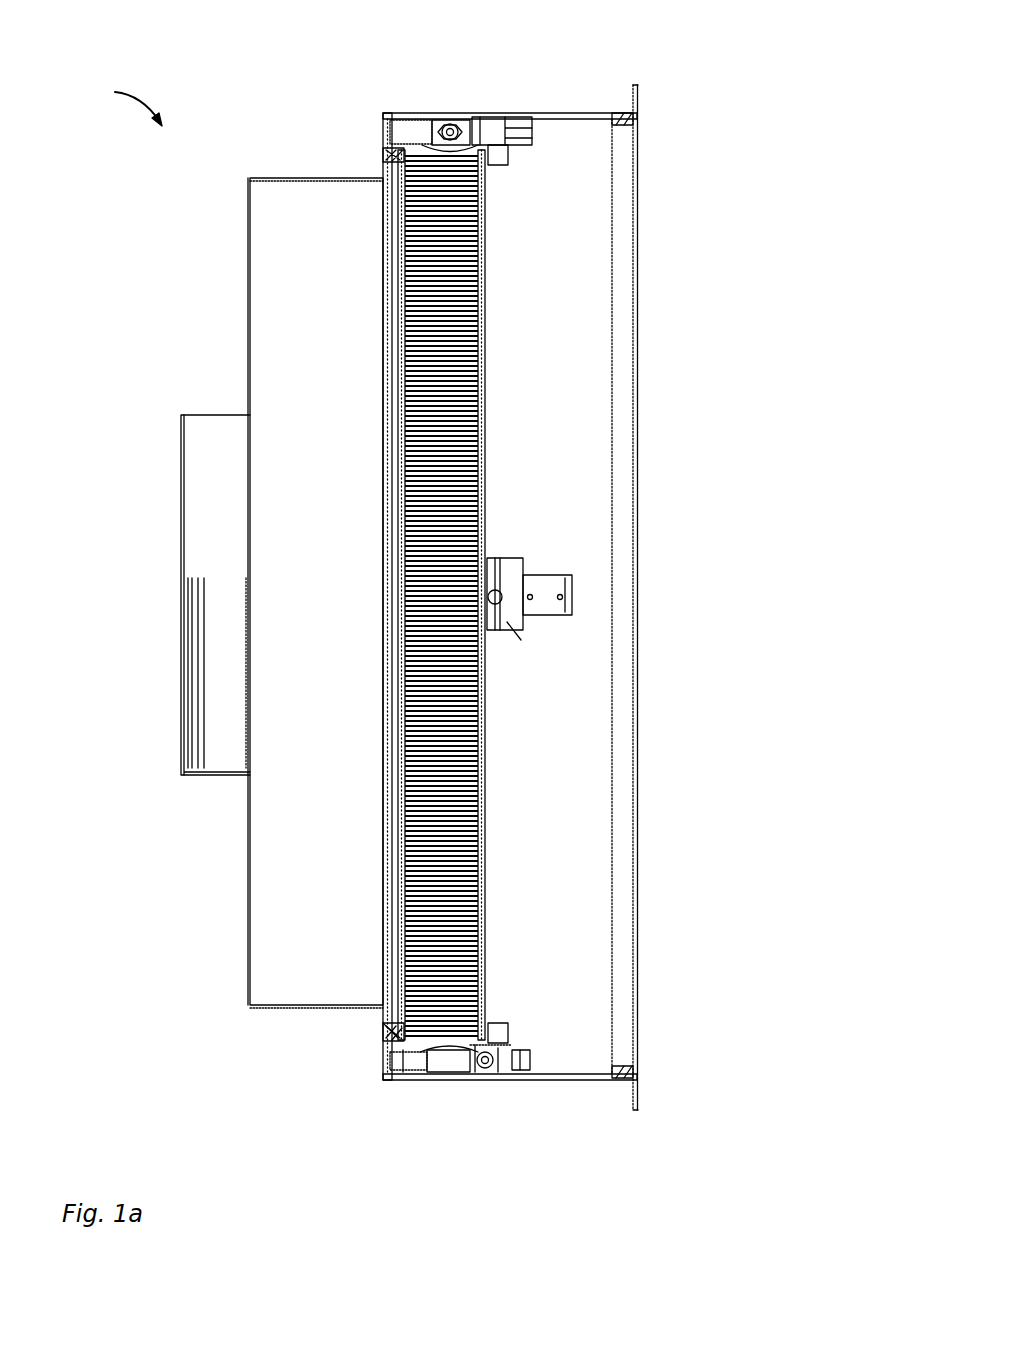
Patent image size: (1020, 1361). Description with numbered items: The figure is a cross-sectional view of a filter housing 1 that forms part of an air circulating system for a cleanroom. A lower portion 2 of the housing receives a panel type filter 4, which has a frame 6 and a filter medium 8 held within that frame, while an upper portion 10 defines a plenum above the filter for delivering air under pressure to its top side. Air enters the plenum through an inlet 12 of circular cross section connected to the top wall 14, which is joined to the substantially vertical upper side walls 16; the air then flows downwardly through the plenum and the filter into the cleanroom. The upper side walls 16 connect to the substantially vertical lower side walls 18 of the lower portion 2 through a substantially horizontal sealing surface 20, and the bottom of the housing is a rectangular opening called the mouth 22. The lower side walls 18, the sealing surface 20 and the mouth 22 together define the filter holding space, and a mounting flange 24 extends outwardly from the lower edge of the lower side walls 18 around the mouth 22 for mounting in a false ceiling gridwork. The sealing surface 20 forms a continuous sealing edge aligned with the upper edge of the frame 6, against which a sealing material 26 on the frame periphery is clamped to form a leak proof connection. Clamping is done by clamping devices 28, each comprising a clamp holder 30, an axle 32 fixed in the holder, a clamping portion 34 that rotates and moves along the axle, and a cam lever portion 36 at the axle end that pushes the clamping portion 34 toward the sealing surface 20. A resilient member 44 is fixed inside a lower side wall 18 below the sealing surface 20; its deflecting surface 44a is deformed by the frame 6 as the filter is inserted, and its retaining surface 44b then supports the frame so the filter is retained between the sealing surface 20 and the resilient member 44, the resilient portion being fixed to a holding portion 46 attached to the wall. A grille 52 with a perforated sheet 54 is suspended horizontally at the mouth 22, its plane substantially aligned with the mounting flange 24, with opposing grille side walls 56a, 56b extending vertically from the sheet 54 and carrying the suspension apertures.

The filter housing 1 is at (122, 101).
The lower portion 2 is at (578, 945).
The panel type filter 4 is at (486, 240).
The frame 6 is at (398, 150).
The filter medium 8 is at (455, 380).
The upper portion 10 is at (290, 355).
The inlet 12 is at (180, 448).
The top wall 14 is at (250, 215).
The upper side wall 16 is at (280, 1010).
The lower side wall 18 is at (557, 1080).
The sealing surface 20 is at (400, 165).
The mouth 22 is at (637, 862).
The mounting flange 24 is at (685, 597).
The sealing material 26 is at (388, 1030).
The clamping device 28 is at (430, 115).
The clamp holder 30 is at (493, 1072).
The axle 32 is at (452, 1068).
The clamping portion 34 is at (505, 157).
The cam lever portion 36 is at (522, 123).
The resilient member 44 is at (612, 597).
The deflecting surface 44a is at (504, 628).
The retaining surface 44b is at (493, 568).
The holding portion 46 is at (558, 580).
The grille 52 is at (622, 170).
The perforated sheet 54 is at (637, 383).
The grille side wall 56a is at (613, 116).
The grille side wall 56b is at (620, 1075).